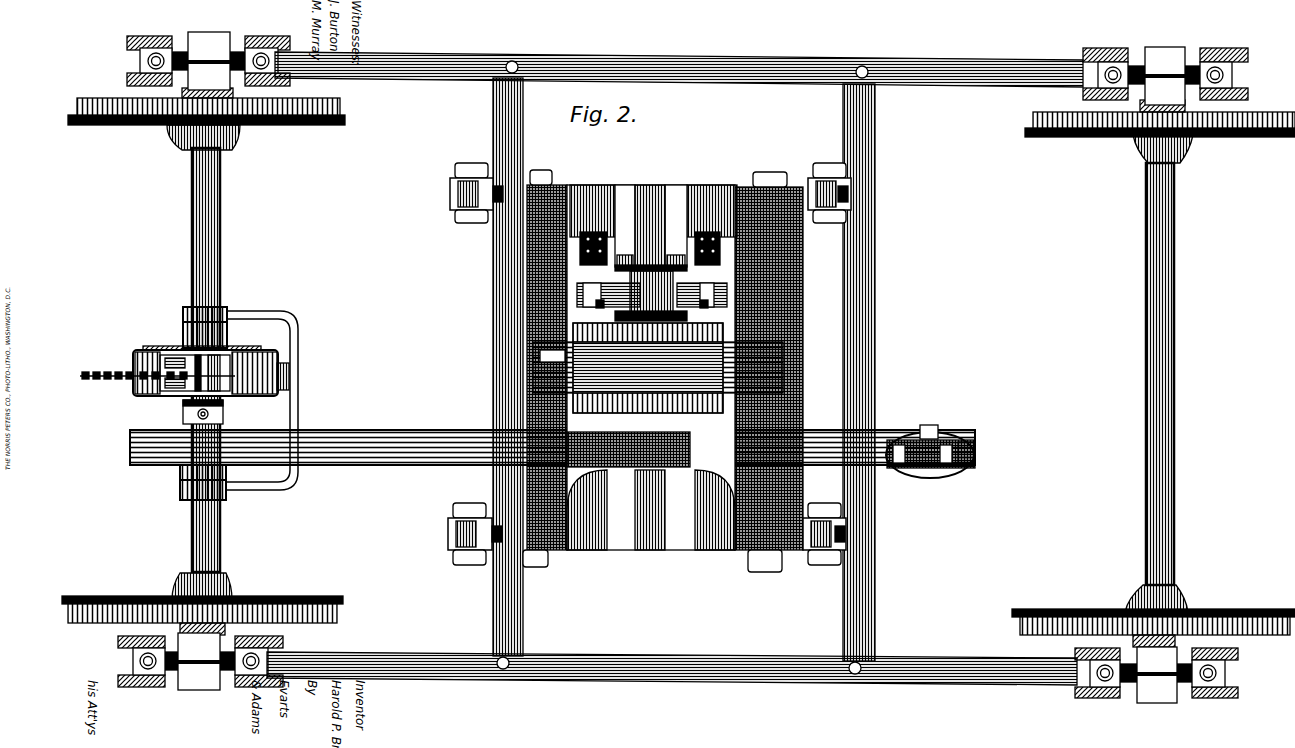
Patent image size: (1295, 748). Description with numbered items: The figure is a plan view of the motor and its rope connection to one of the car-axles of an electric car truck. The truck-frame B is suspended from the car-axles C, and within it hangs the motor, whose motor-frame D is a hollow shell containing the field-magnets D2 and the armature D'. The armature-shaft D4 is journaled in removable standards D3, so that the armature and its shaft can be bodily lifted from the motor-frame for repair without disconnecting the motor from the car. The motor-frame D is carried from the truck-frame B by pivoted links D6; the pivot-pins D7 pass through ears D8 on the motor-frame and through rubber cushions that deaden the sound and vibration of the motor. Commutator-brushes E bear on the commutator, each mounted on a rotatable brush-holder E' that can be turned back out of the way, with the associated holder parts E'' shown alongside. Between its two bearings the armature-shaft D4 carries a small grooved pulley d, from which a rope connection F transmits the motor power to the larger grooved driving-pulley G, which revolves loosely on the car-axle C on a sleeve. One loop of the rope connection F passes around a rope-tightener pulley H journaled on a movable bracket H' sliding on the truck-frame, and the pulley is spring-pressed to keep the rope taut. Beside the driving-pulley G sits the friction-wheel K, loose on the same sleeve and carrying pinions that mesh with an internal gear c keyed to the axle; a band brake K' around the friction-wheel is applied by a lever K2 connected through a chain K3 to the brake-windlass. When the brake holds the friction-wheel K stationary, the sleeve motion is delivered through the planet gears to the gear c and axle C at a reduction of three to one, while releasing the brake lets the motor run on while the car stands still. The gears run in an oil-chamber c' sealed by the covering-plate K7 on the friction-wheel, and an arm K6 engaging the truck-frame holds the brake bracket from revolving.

The truck-frame B is at (405, 101).
The car-axles C is at (222, 237).
The oil-chamber c' is at (683, 377).
The internal gear c is at (202, 336).
The motor-frame D is at (652, 375).
The armature D' is at (658, 368).
The field-magnets D2 is at (527, 280).
The standards D3 is at (665, 190).
The armature-shaft D4 is at (668, 245).
The pivoted links D6 is at (480, 212).
The pivot-pins D7 is at (470, 170).
The ears D8 is at (455, 192).
The commutator-brushes E is at (552, 356).
The brush-holder E' is at (631, 287).
The brush adjusting screws E'' is at (713, 308).
The rope connection F is at (393, 465).
The driving-pulley G is at (166, 463).
The rope-tightener pulley H is at (934, 443).
The movable bracket H' is at (984, 444).
The friction-wheel K is at (195, 385).
The brake K' is at (119, 379).
The lever K2 is at (236, 362).
The chain K3 is at (98, 371).
The arm K6 is at (205, 318).
The covering-plate K7 is at (293, 402).
The grooved pulley d is at (618, 440).